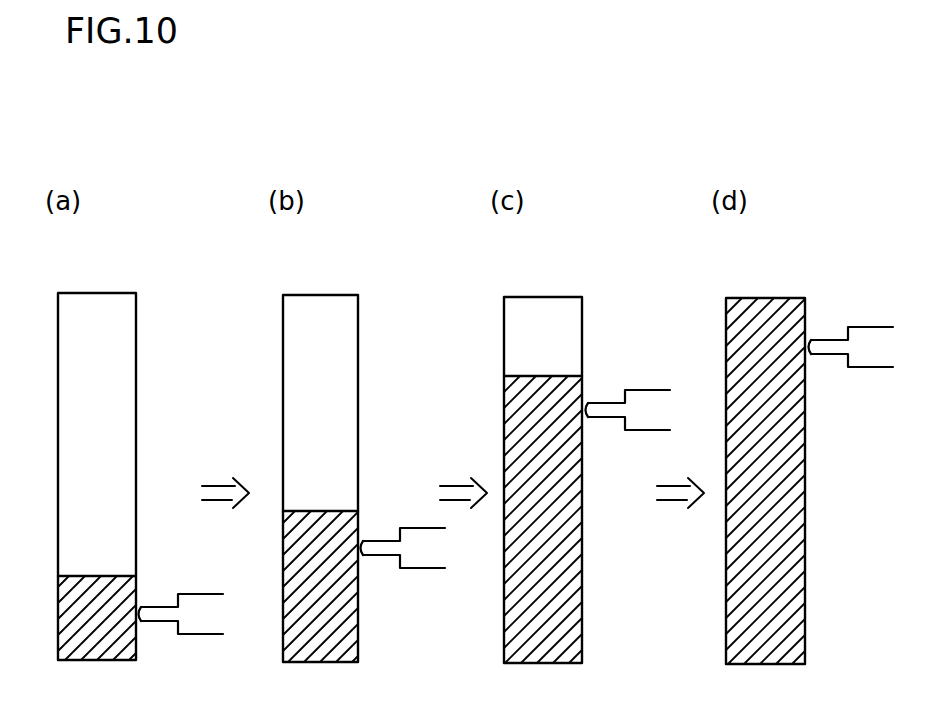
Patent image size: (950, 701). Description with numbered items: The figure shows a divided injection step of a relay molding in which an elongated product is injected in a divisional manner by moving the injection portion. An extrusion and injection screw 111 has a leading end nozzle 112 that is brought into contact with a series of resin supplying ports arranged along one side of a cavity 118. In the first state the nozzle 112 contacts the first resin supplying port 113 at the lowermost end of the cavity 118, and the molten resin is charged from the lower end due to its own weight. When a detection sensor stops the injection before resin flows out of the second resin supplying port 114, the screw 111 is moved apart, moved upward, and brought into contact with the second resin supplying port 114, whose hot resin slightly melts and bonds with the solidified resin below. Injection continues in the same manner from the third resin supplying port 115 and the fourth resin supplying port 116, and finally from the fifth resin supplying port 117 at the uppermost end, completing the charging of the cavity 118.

The extrusion and injection screw 111 is at (883, 326).
The leading end nozzle 112 is at (852, 384).
The first resin supplying port 113 is at (821, 607).
The second resin supplying port 114 is at (821, 538).
The third resin supplying port 115 is at (821, 469).
The fourth resin supplying port 116 is at (841, 429).
The fifth resin supplying port 117 is at (825, 314).
The cavity 118 is at (727, 309).